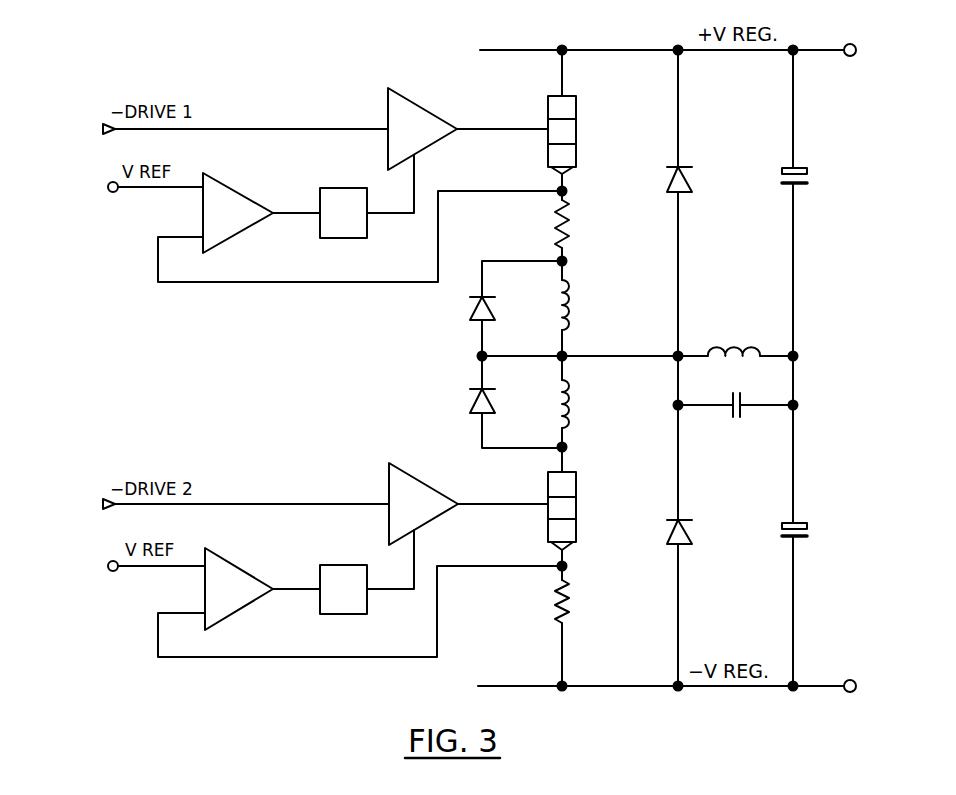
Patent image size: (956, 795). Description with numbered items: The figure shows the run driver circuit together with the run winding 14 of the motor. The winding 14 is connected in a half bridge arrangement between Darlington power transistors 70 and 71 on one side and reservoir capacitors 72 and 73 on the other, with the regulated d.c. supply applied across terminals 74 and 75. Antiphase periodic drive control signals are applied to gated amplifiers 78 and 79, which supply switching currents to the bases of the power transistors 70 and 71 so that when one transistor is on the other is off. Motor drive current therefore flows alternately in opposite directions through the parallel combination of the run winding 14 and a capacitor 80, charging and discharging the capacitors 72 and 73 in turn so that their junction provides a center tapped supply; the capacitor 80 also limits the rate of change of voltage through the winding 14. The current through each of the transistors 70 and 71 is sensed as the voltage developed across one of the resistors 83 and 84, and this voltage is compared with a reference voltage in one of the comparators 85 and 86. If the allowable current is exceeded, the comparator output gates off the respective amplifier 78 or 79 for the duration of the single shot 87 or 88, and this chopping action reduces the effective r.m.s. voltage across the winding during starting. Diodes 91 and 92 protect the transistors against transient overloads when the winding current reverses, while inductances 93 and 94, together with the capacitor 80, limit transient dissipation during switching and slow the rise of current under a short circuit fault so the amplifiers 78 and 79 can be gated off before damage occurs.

The run winding 14 is at (730, 348).
The Darlington power transistor 70 is at (577, 135).
The Darlington power transistor 71 is at (577, 509).
The reservoir capacitor 72 is at (805, 168).
The reservoir capacitor 73 is at (805, 522).
The terminal 74 is at (850, 43).
The terminal 75 is at (850, 679).
The gated amplifier 78 is at (464, 103).
The gated amplifier 79 is at (453, 464).
The capacitor 80 is at (740, 417).
The resistor 83 is at (572, 234).
The resistor 84 is at (572, 608).
The comparator 85 is at (268, 168).
The comparator 86 is at (271, 548).
The single shot 87 is at (367, 227).
The single shot 88 is at (360, 614).
The diode 91 is at (690, 173).
The diode 92 is at (690, 530).
The inductance 93 is at (571, 308).
The inductance 94 is at (573, 413).